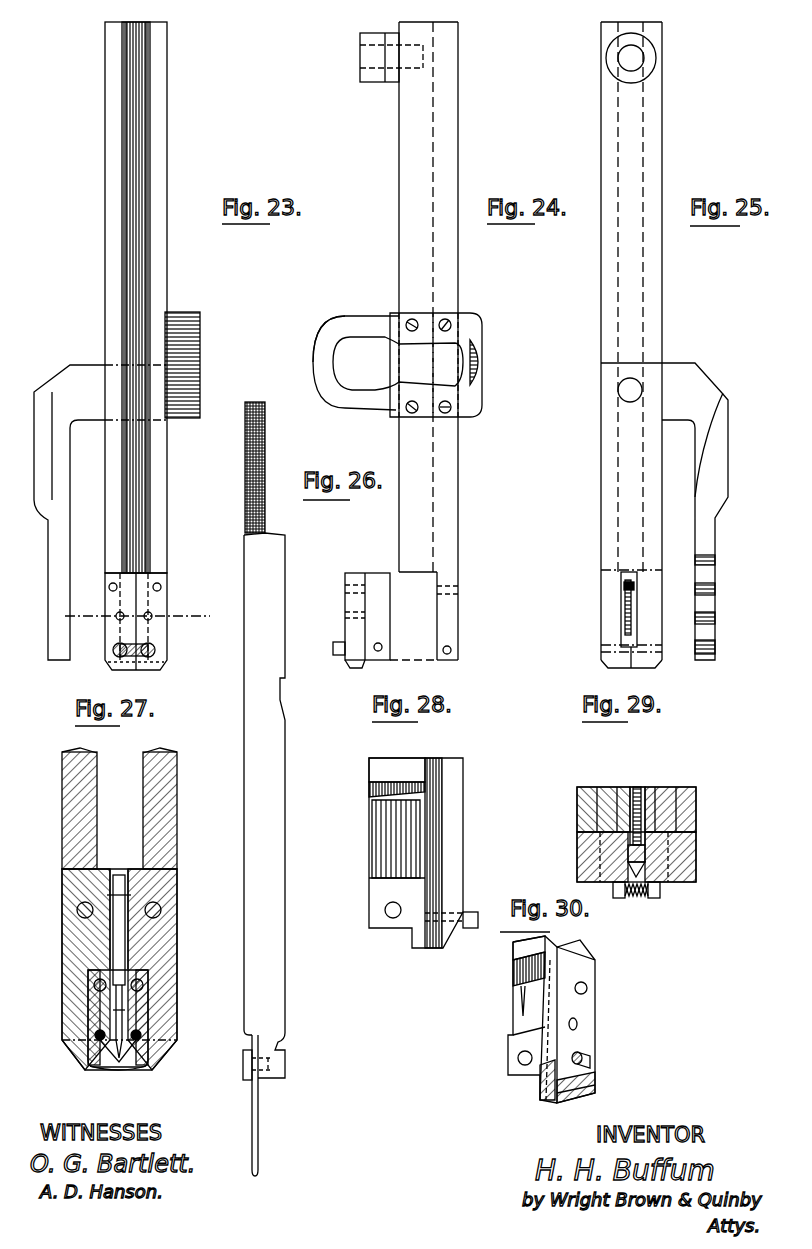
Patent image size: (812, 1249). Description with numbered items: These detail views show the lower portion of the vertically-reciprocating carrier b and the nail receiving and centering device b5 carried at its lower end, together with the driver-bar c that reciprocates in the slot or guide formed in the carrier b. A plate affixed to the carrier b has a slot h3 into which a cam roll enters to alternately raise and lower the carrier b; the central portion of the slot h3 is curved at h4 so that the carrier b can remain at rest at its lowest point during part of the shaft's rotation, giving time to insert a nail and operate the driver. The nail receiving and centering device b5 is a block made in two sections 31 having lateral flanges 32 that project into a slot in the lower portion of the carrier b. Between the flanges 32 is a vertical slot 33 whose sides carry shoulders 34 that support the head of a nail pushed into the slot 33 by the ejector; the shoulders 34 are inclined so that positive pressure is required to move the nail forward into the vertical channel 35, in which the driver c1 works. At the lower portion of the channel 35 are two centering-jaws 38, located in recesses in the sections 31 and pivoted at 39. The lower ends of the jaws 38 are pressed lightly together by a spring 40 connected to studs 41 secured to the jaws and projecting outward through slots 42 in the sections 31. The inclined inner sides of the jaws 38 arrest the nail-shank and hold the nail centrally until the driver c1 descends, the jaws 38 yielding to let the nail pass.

In FIG. 23, the vertically-reciprocating carrier b is at (105, 305).
In FIG. 24, the vertically-reciprocating carrier b is at (416, 270).
In FIG. 25, the vertically-reciprocating carrier b is at (610, 291).
In FIG. 27, the vertically-reciprocating carrier b is at (78, 812).
In FIG. 23, the nail receiving and centering device b5 is at (165, 605).
In FIG. 27, the nail receiving and centering device b5 is at (72, 912).
In FIG. 26, the driver-bar c is at (272, 768).
In FIG. 26, the driver c1 is at (256, 1118).
In FIG. 24, the slot h3 is at (345, 357).
In FIG. 24, the curved portion of slot h4 is at (392, 394).
In FIG. 24, the sections 31 is at (358, 576).
In FIG. 27, the sections 31 is at (70, 940).
In FIG. 28, the sections 31 is at (455, 764).
In FIG. 29, the sections 31 is at (580, 858).
In FIG. 30, the sections 31 is at (585, 1002).
In FIG. 28, the lateral flanges 32 is at (388, 768).
In FIG. 29, the lateral flanges 32 is at (622, 787).
In FIG. 30, the lateral flanges 32 is at (515, 940).
In FIG. 27, the vertical slot 33 is at (122, 960).
In FIG. 28, the vertical slot 33 is at (385, 824).
In FIG. 29, the vertical slot 33 is at (636, 786).
In FIG. 30, the vertical slot 33 is at (524, 1020).
In FIG. 27, the shoulders 34 is at (105, 895).
In FIG. 28, the shoulders 34 is at (372, 795).
In FIG. 30, the shoulders 34 is at (515, 970).
In FIG. 27, the vertical channel 35 is at (140, 882).
In FIG. 28, the vertical channel 35 is at (440, 815).
In FIG. 30, the vertical channel 35 is at (575, 951).
In FIG. 27, the centering-jaws 38 is at (107, 1068).
In FIG. 27, the pivots 39 is at (94, 985).
In FIG. 23, the spring 40 is at (135, 648).
In FIG. 29, the spring 40 is at (637, 898).
In FIG. 23, the studs 41 is at (115, 655).
In FIG. 24, the studs 41 is at (336, 650).
In FIG. 27, the studs 41 is at (96, 1040).
In FIG. 28, the studs 41 is at (470, 914).
In FIG. 29, the studs 41 is at (620, 898).
In FIG. 30, the studs 41 is at (592, 1060).
In FIG. 30, the slots 42 is at (574, 1094).